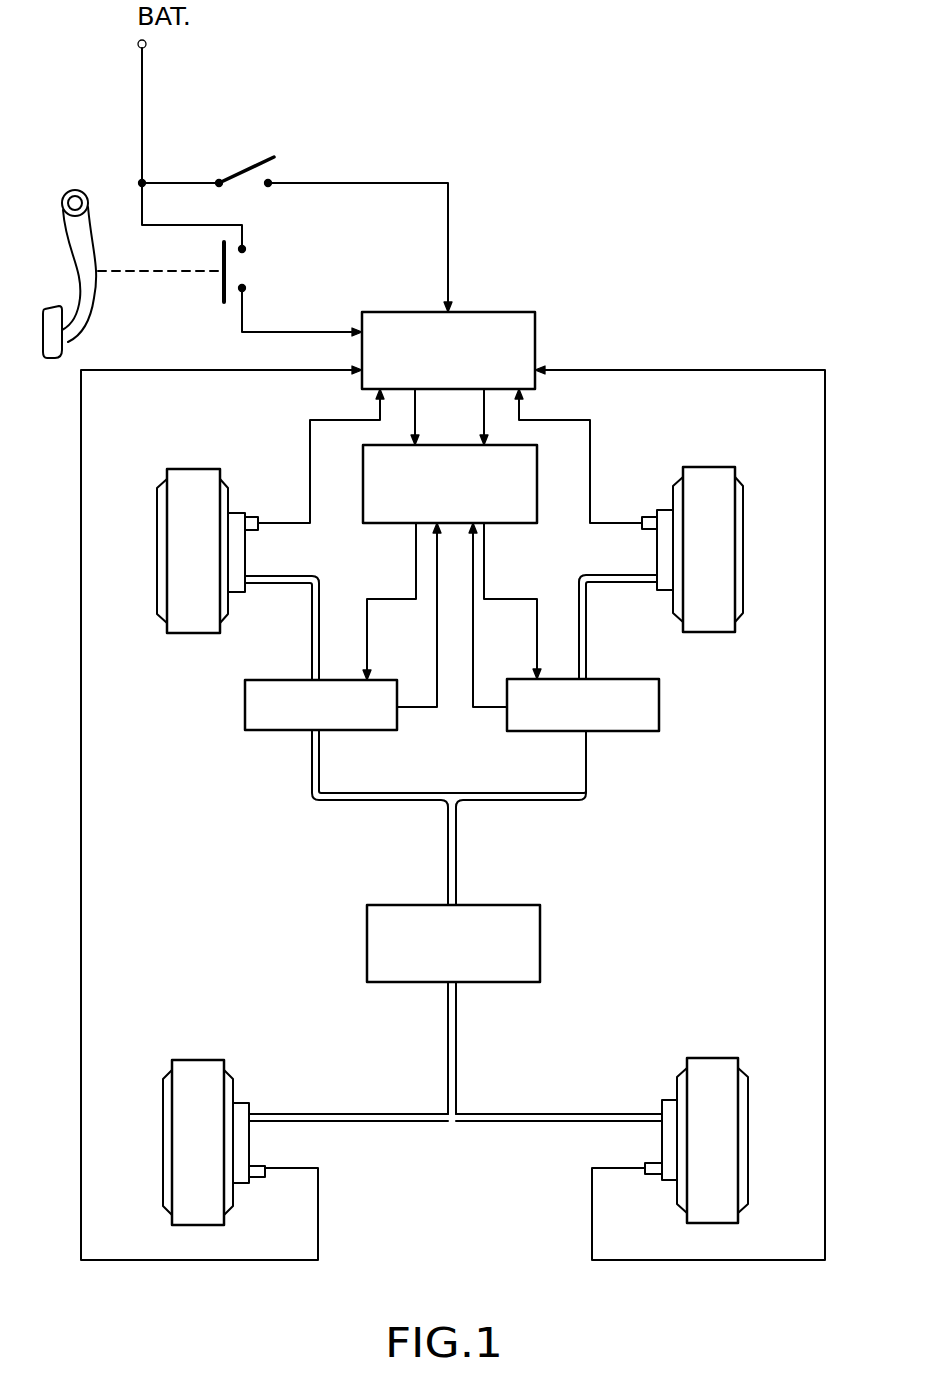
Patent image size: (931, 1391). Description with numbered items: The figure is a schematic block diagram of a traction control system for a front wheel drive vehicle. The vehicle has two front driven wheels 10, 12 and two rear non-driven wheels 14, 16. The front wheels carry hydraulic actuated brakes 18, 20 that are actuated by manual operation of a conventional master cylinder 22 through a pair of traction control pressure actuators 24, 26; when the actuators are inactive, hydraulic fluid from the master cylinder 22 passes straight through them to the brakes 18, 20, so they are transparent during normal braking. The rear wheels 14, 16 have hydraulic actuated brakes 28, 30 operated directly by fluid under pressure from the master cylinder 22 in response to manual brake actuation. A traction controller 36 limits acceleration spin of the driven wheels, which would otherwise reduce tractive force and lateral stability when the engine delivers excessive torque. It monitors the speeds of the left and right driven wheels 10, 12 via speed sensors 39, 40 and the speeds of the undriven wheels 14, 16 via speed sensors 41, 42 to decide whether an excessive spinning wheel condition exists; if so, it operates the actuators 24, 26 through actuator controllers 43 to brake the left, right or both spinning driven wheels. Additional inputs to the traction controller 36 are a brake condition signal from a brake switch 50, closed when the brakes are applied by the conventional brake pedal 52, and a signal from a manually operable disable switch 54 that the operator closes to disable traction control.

The front driven wheel 10 is at (184, 469).
The front driven wheel 12 is at (697, 474).
The rear non-driven wheel 14 is at (218, 1073).
The rear non-driven wheel 16 is at (712, 1085).
The hydraulic actuated brake 18 is at (248, 566).
The hydraulic actuated brake 20 is at (662, 560).
The master cylinder 22 is at (503, 915).
The traction control pressure actuator 24 is at (250, 725).
The traction control pressure actuator 26 is at (652, 718).
The hydraulic actuated brake 28 is at (240, 1152).
The hydraulic actuated brake 30 is at (670, 1138).
The traction controller 36 is at (526, 344).
The speed sensor 39 is at (255, 517).
The speed sensor 40 is at (650, 517).
The speed sensor 41 is at (256, 1178).
The speed sensor 42 is at (655, 1175).
The actuator controllers 43 is at (370, 478).
The brake switch 50 is at (222, 268).
The brake pedal 52 is at (86, 303).
The disable switch 54 is at (250, 160).